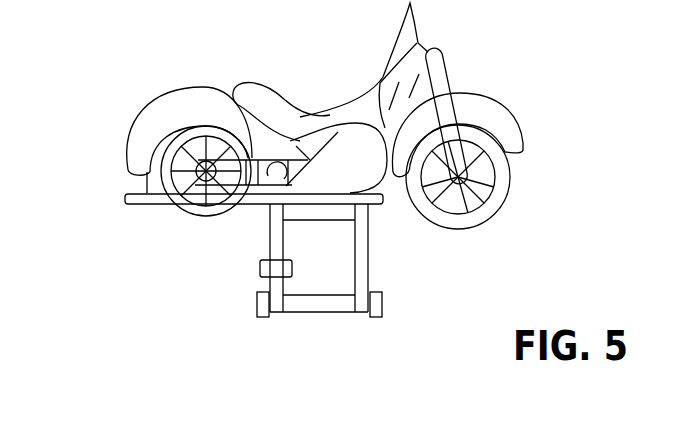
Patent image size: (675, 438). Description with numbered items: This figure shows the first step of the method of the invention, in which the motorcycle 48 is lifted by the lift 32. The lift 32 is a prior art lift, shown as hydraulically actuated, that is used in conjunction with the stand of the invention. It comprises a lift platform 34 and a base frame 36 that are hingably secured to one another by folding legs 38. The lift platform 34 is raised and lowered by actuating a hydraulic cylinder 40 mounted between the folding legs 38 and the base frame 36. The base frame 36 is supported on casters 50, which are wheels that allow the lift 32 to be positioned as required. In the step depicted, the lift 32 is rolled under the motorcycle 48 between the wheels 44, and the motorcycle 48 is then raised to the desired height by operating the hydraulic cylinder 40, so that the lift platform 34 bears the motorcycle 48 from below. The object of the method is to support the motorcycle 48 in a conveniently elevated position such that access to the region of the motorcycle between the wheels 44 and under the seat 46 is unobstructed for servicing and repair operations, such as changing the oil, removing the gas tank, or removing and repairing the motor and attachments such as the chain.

The motorcycle 48 is at (123, 100).
The seat 46 is at (300, 117).
The wheels 44 is at (177, 217).
The lift 32 is at (393, 297).
The folding legs 38 is at (268, 236).
The lift platform 34 is at (320, 206).
The base frame 36 is at (316, 313).
The hydraulic cylinder 40 is at (260, 266).
The casters 50 is at (258, 316).